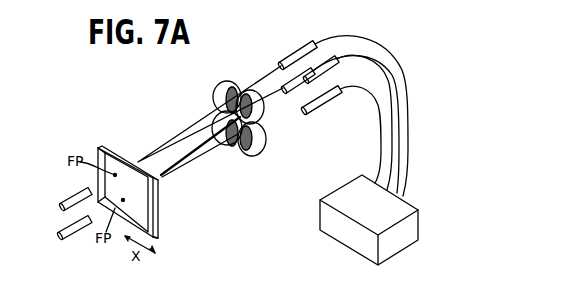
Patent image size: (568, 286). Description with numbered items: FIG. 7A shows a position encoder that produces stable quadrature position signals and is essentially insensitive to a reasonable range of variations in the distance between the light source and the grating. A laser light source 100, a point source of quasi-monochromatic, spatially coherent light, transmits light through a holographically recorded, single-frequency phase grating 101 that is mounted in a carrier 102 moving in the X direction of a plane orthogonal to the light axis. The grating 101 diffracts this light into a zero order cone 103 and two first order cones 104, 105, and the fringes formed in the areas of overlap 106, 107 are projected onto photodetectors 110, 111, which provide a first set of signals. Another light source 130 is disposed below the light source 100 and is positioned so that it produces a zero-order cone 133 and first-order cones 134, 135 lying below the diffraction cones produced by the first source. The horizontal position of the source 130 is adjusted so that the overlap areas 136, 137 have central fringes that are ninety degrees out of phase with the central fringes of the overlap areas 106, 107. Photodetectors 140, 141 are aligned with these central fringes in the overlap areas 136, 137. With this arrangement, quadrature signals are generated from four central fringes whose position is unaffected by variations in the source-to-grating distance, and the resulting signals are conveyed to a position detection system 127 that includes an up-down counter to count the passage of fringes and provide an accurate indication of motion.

The laser light source 100 is at (67, 200).
The phase grating 101 is at (124, 170).
The carrier 102 is at (158, 218).
The zero order cone 103 is at (237, 88).
The first order cone 104 is at (220, 86).
The first order cone 105 is at (262, 118).
The area of overlap 106 is at (233, 87).
The area of overlap 107 is at (252, 102).
The photodetector 110 is at (299, 46).
The photodetector 111 is at (329, 64).
The position detection system 127 is at (333, 227).
The light source 130 is at (77, 238).
The zero-order cone 133 is at (227, 145).
The first-order cone 134 is at (213, 122).
The first-order cone 135 is at (258, 148).
The overlap area 136 is at (228, 146).
The overlap area 137 is at (239, 150).
The photodetector 140 is at (295, 94).
The photodetector 141 is at (318, 102).